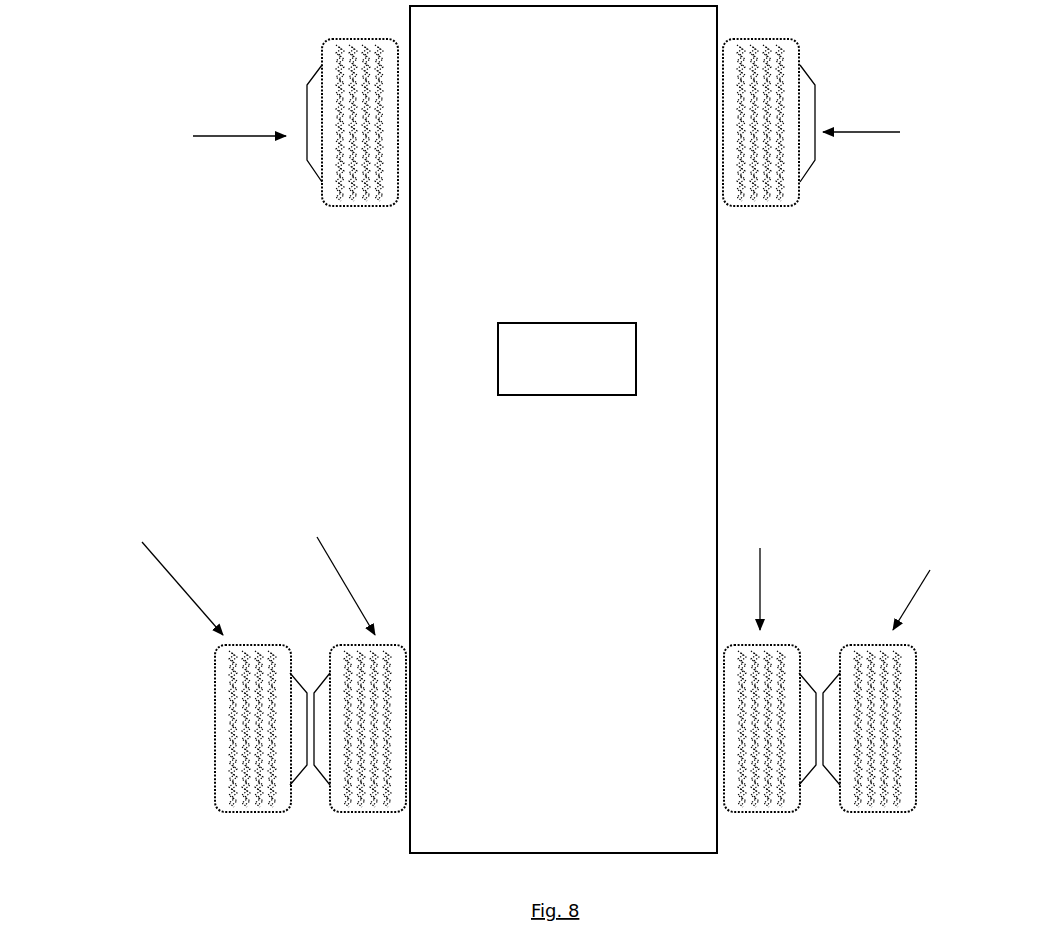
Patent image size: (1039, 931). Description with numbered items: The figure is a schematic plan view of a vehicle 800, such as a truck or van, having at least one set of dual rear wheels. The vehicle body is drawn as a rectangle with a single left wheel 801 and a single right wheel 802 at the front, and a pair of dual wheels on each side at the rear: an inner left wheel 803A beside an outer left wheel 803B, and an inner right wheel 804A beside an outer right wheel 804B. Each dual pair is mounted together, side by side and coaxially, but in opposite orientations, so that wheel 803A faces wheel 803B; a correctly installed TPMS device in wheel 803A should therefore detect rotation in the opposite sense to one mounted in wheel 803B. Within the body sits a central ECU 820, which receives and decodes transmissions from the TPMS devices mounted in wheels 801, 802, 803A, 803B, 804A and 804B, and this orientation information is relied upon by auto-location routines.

The vehicle 800 is at (563, 429).
The wheel 801 is at (259, 144).
The wheel 802 is at (851, 144).
The wheel 803A is at (335, 649).
The wheel 803B is at (182, 678).
The wheel 804A is at (770, 649).
The wheel 804B is at (917, 673).
The central ECU 820 is at (567, 359).